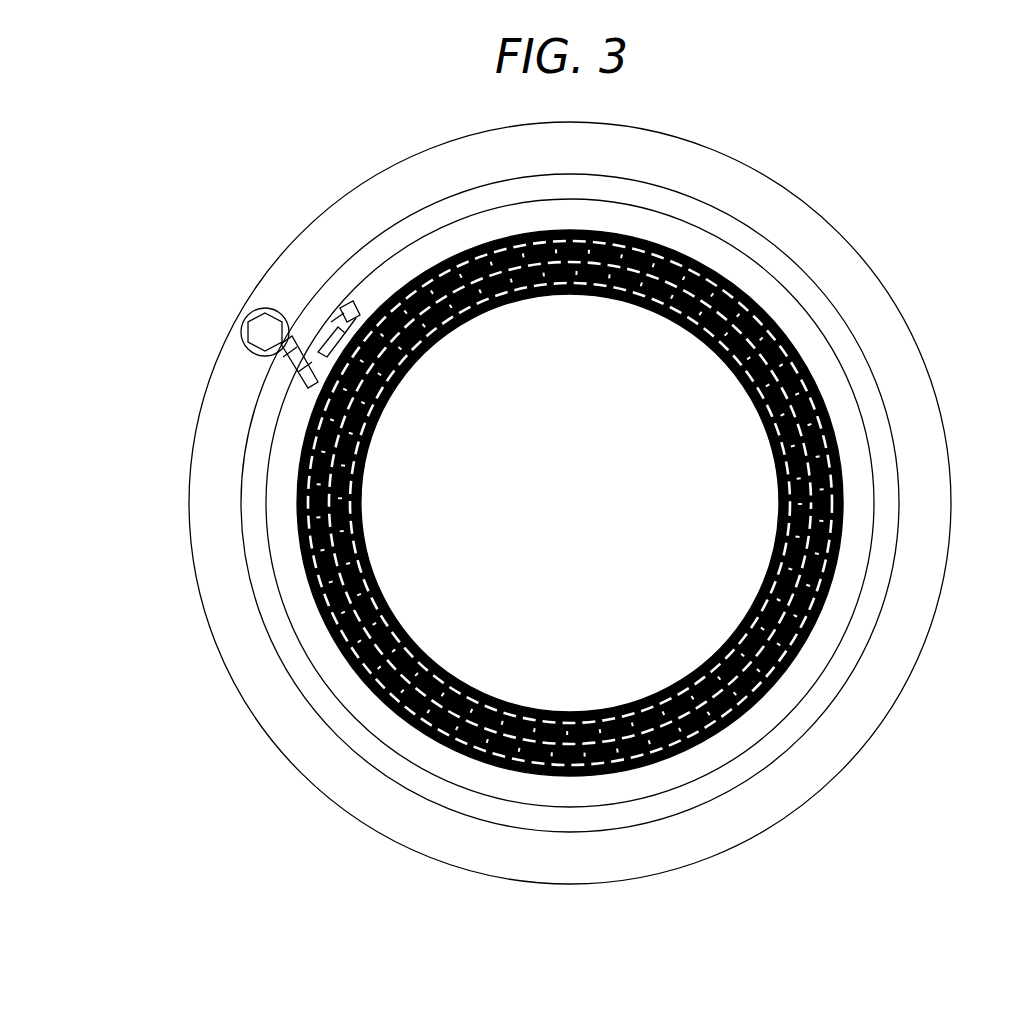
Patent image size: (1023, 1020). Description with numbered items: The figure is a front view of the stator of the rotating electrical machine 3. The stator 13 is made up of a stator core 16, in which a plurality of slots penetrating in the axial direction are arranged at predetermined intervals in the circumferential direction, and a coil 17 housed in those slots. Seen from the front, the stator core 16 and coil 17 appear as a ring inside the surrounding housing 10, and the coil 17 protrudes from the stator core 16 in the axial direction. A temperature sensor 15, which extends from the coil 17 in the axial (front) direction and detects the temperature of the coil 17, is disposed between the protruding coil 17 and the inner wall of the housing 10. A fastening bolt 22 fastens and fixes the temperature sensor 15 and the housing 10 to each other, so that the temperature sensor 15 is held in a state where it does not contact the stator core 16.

The rotating electrical machine 3 is at (255, 170).
The housing 10 is at (875, 320).
The stator 13 is at (775, 308).
The temperature sensor 15 is at (203, 354).
The stator core 16 is at (752, 486).
The coil 17 is at (767, 422).
The fastening bolt 22 is at (262, 334).